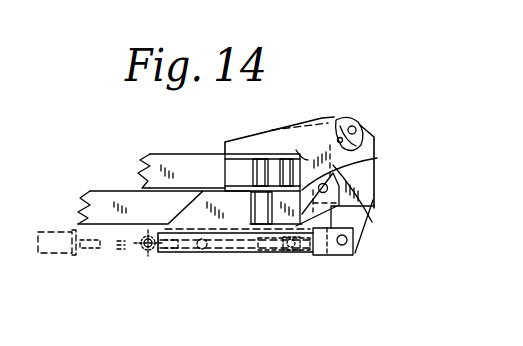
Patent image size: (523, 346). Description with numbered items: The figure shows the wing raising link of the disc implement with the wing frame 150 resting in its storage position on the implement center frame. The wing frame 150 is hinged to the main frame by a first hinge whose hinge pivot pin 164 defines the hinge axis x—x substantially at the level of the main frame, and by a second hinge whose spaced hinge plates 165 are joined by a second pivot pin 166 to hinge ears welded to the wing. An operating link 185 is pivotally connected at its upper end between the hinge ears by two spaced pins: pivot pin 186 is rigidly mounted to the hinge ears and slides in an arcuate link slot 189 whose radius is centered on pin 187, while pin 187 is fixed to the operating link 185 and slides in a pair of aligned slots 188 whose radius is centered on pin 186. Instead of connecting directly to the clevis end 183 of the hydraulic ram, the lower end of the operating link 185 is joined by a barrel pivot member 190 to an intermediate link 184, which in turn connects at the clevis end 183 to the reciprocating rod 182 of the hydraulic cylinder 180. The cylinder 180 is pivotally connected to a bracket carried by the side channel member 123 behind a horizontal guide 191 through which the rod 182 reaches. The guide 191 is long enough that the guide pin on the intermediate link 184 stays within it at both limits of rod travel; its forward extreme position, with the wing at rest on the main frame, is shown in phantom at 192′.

The side channel member 123 is at (109, 190).
The wing frame 150 is at (157, 148).
The hinge pivot pin 164 is at (265, 119).
The hinge plates 165 is at (375, 205).
The second pivot pin 166 is at (375, 158).
The hydraulic cylinder 180 is at (46, 256).
The reciprocating rod 182 is at (97, 257).
The clevis end 183 is at (153, 258).
The intermediate link 184 is at (330, 257).
The operating link 185 is at (375, 182).
The pivot pin 186 is at (357, 122).
The pivot pin 187 is at (308, 157).
The aligned slots 188 is at (362, 98).
The arcuate link slot 189 is at (376, 132).
The barrel pivot member 190 is at (362, 232).
The horizontal guide 191 is at (225, 252).
The forward extreme position of guide pin 192′ is at (298, 256).